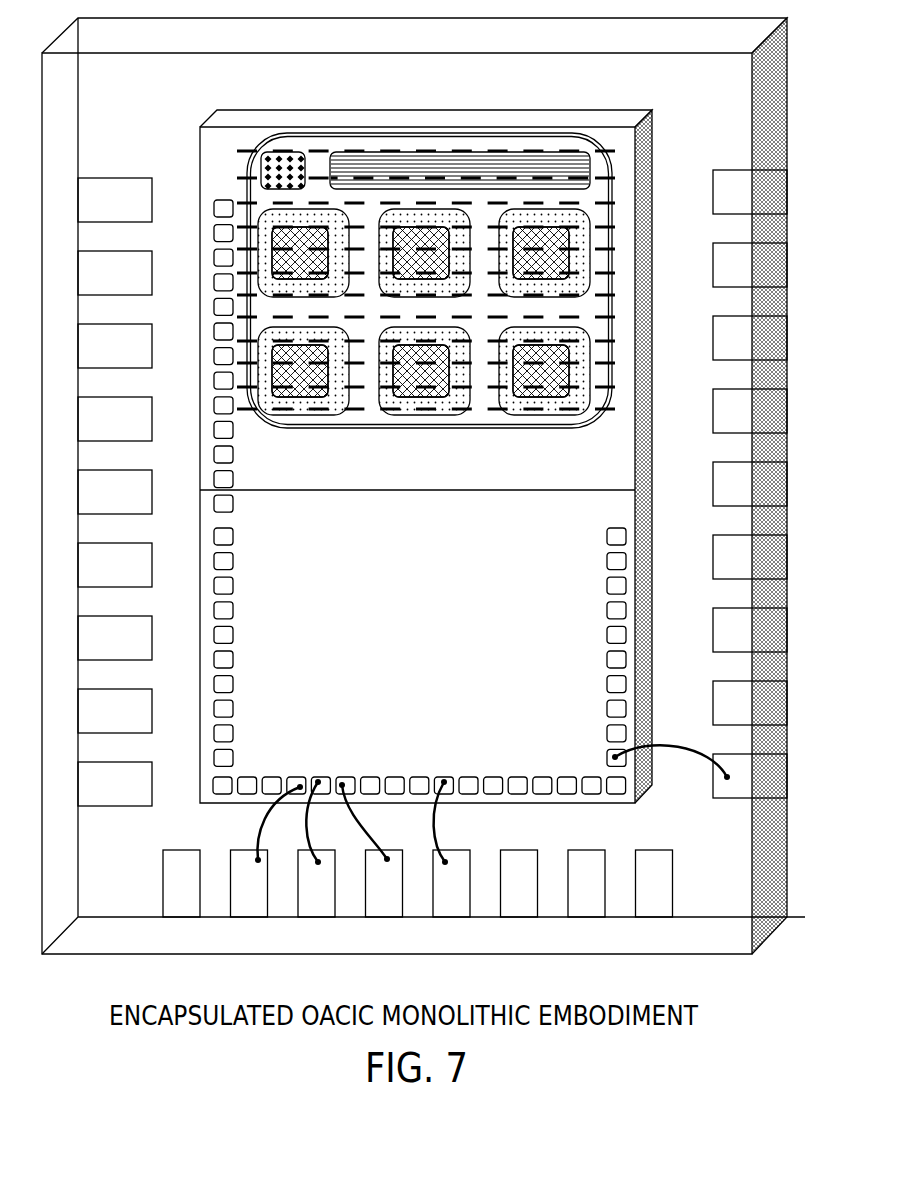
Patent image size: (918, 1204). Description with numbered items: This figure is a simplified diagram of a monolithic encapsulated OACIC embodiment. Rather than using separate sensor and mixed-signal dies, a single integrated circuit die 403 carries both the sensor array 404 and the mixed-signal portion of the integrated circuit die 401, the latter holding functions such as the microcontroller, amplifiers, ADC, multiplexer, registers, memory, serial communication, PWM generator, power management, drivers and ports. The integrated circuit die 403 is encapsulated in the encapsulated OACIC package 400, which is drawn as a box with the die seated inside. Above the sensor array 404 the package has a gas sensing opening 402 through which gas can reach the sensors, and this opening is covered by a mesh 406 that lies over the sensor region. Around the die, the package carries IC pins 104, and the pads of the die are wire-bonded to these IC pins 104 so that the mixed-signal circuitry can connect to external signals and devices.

The encapsulated OACIC package 400 is at (580, 45).
The mixed-signal portion of the integrated circuit die 401 is at (406, 591).
The gas sensing opening 402 is at (322, 143).
The integrated circuit die 403 is at (635, 104).
The sensor array 404 is at (262, 208).
The mesh 406 is at (607, 212).
The IC pins 104 is at (713, 775).